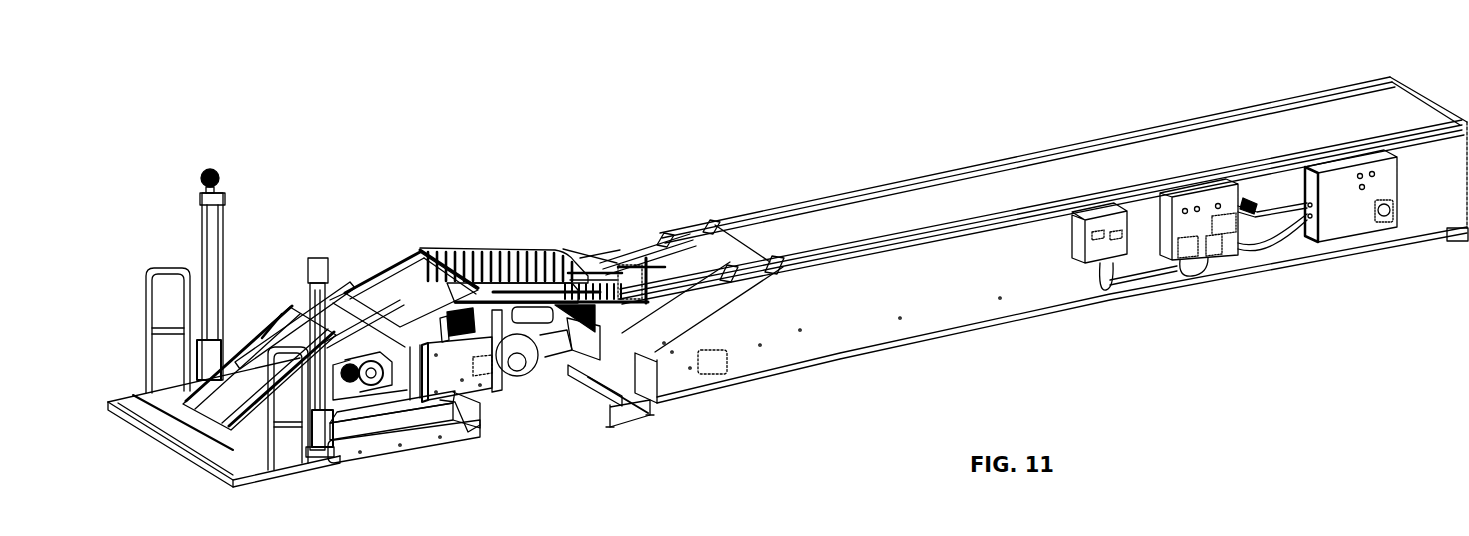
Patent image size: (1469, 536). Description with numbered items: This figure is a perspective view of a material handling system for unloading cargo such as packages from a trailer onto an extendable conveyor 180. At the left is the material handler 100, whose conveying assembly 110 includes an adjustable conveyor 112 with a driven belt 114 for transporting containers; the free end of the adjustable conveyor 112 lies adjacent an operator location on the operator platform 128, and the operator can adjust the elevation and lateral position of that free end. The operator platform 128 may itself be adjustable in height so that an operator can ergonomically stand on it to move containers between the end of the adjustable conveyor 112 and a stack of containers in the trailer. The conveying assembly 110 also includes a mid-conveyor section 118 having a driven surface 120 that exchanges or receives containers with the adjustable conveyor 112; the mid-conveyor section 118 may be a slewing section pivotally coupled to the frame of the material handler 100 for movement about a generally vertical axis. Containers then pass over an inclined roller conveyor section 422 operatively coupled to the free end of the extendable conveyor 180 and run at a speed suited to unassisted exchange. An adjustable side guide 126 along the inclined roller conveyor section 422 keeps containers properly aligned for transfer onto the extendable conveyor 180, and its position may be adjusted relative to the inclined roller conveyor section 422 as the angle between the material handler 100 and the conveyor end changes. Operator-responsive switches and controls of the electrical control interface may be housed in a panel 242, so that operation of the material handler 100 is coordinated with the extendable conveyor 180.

The material handler 100 is at (536, 80).
The conveying assembly 110 is at (443, 218).
The adjustable conveyor 112 is at (285, 326).
The driven belt 114 is at (259, 368).
The mid-conveyor section 118 is at (382, 270).
The driven surface 120 is at (411, 288).
The adjustable side guide 126 is at (599, 269).
The operator platform 128 is at (170, 407).
The extendable conveyor 180 is at (1034, 240).
The panel 242 is at (458, 400).
The inclined roller conveyor section 422 is at (520, 248).